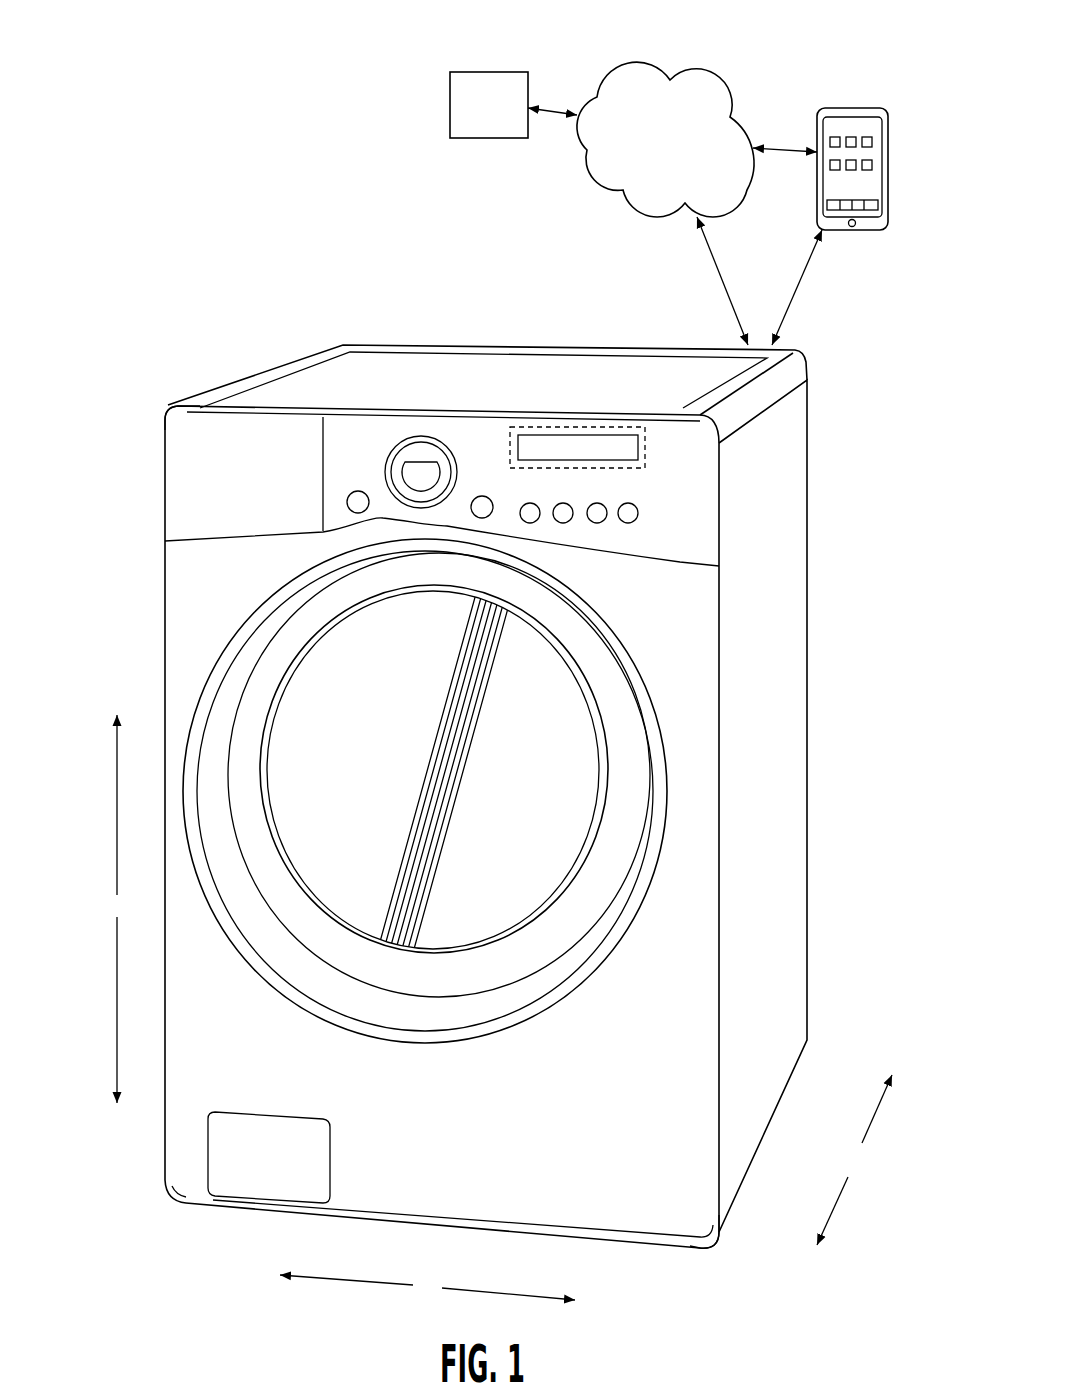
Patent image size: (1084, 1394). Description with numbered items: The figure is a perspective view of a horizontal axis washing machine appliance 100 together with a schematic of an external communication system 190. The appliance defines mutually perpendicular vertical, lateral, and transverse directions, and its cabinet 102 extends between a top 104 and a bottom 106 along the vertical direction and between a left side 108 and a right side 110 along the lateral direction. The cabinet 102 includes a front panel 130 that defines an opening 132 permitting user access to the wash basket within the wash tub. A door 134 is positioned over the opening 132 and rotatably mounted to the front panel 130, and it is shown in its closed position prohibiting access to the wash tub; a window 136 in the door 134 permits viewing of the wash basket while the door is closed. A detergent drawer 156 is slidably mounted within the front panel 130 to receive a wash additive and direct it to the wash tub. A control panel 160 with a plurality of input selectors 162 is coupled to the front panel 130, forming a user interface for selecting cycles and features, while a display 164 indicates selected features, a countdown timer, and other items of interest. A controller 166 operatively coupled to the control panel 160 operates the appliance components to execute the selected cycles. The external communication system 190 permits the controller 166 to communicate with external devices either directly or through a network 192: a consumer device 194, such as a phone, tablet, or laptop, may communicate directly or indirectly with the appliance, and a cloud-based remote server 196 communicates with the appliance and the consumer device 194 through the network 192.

The washing machine appliance 100 is at (142, 322).
The cabinet 102 is at (787, 643).
The top 104 is at (820, 355).
The bottom 106 is at (803, 1095).
The left side 108 is at (170, 1210).
The right side 110 is at (717, 1250).
The front panel 130 is at (185, 602).
The opening 132 is at (628, 654).
The door 134 is at (638, 750).
The window 136 is at (520, 898).
The detergent drawer 156 is at (183, 445).
The control panel 160 is at (487, 440).
The input selectors 162 is at (413, 460).
The display 164 is at (588, 445).
The controller 166 is at (568, 425).
The external communication system 190 is at (832, 70).
The network 192 is at (665, 139).
The consumer device 194 is at (888, 183).
The remote server 196 is at (489, 105).